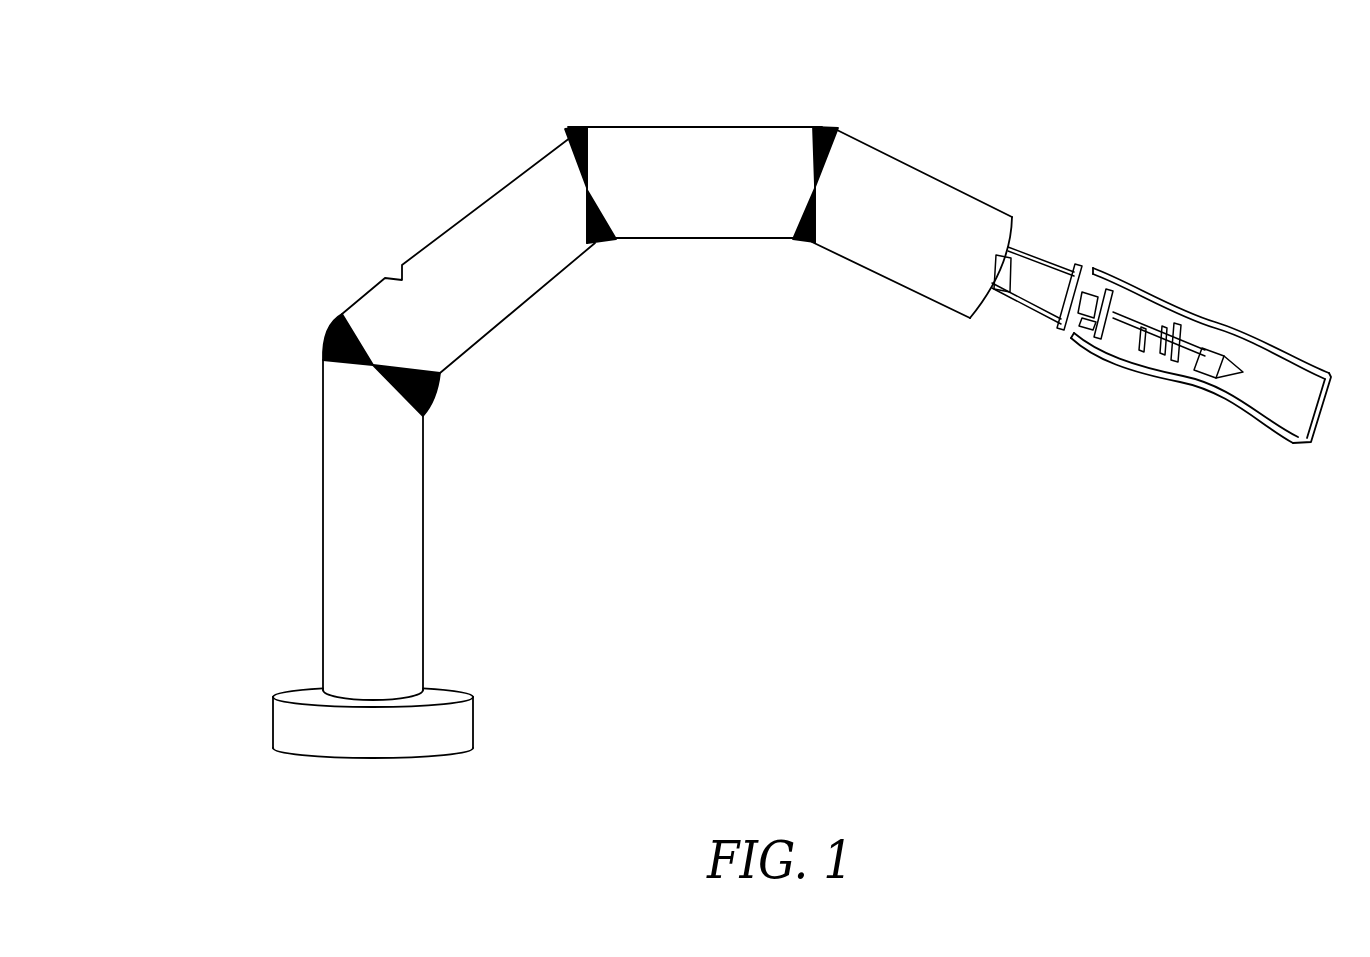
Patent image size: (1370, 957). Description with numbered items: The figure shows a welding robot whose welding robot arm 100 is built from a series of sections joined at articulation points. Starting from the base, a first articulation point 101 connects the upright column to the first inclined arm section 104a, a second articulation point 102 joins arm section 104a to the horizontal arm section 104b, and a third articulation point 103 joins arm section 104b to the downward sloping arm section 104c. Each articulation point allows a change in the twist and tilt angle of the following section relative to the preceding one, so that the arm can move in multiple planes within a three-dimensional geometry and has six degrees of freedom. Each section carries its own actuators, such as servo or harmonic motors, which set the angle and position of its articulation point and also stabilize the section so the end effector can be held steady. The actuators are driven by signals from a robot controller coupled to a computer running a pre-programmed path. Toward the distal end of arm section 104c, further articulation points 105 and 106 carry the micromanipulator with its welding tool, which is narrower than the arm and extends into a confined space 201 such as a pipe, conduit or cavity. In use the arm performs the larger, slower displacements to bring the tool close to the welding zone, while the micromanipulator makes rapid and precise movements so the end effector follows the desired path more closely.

The welding robot arm 100 is at (328, 87).
The articulation point 101 is at (430, 390).
The articulation point 102 is at (602, 242).
The articulation point 103 is at (803, 243).
The arm section 104a is at (473, 277).
The arm section 104b is at (703, 190).
The arm section 104c is at (903, 243).
The articulation point 105 is at (1107, 335).
The articulation point 106 is at (1188, 353).
The confined space 201 is at (1293, 367).